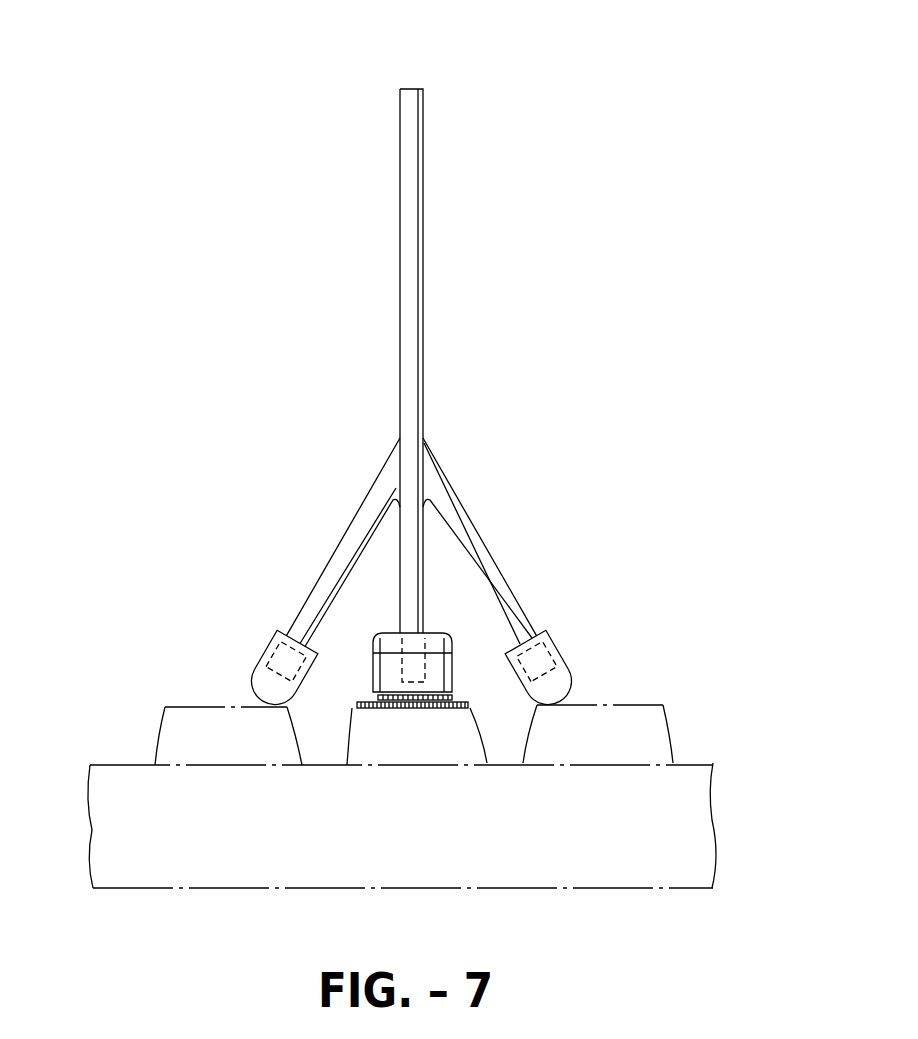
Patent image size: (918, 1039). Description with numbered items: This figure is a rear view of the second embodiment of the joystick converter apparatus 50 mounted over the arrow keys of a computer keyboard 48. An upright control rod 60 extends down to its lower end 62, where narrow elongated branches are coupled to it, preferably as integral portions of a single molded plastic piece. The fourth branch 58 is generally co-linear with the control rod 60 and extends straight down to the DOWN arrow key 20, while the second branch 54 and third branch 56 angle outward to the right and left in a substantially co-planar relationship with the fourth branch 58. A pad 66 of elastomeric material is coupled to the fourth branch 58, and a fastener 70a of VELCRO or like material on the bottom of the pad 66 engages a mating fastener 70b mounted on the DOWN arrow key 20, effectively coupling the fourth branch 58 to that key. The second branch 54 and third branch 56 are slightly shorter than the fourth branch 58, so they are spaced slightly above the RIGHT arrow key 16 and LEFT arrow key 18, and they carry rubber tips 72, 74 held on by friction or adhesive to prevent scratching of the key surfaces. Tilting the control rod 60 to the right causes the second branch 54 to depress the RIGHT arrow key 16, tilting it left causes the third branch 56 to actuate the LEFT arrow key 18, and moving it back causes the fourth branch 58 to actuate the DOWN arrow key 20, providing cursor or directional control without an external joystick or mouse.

The joystick converter apparatus 50 is at (289, 354).
The control rod 60 is at (417, 162).
The fourth branch 58 is at (418, 575).
The lower end 62 is at (459, 424).
The third branch 56 is at (335, 558).
The second branch 54 is at (520, 613).
The rubber tip 74 is at (266, 673).
The rubber tip 72 is at (570, 675).
The pad 66 is at (447, 670).
The fastener 70a is at (430, 700).
The mating fastener 70b is at (370, 712).
The DOWN arrow key 20 is at (403, 753).
The LEFT arrow key 18 is at (198, 715).
The RIGHT arrow key 16 is at (665, 740).
The computer keyboard 48 is at (570, 867).